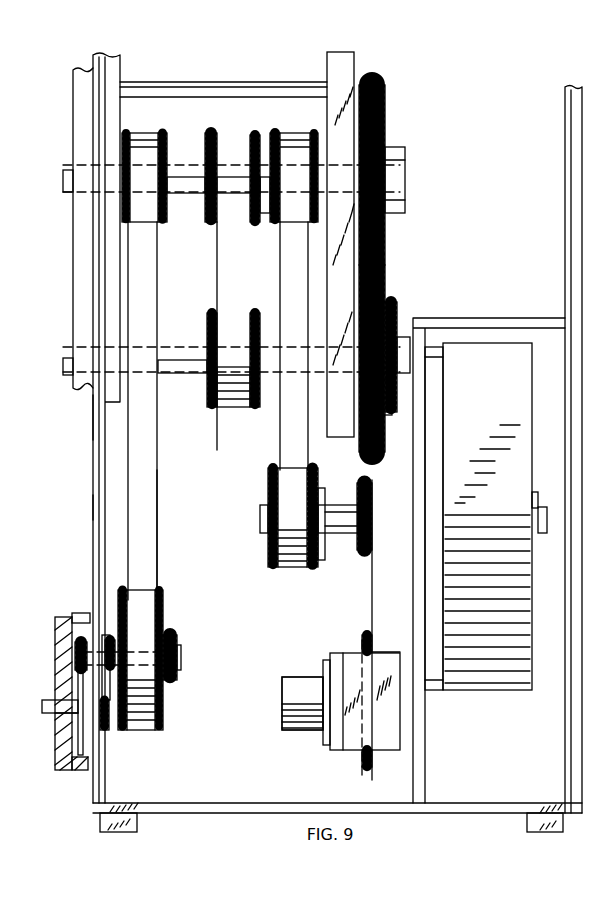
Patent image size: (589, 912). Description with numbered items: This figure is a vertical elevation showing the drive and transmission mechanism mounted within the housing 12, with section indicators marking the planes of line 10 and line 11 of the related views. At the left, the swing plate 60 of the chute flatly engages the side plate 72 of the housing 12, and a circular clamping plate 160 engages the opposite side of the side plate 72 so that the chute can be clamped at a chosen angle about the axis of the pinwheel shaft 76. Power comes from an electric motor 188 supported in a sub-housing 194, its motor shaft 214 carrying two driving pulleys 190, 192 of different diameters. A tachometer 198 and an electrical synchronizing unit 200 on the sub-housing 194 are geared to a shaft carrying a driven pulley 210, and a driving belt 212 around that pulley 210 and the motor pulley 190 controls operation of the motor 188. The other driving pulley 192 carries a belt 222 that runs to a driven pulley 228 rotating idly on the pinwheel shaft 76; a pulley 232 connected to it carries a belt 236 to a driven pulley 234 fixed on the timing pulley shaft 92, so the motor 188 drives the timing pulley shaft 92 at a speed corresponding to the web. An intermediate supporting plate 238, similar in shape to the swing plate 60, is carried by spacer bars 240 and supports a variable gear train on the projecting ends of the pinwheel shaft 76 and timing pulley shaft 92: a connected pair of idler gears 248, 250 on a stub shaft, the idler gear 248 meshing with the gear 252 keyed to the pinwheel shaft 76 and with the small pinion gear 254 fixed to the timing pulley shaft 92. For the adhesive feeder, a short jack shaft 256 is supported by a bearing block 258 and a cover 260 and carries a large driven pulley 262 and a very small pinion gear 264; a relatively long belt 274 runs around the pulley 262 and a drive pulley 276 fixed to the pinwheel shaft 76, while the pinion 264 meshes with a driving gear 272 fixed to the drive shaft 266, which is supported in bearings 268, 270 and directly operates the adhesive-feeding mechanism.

The section line 10- 10 is at (515, 68).
The section line 11- 11 is at (372, 70).
The housing 12 is at (90, 503).
The swing plate 60 is at (73, 84).
The side plate 72 is at (91, 425).
The pinwheel shaft 76 is at (186, 168).
The timing pulley shaft 92 is at (177, 350).
The clamping plate 160 is at (120, 63).
The electric motor 188 is at (483, 672).
The driving pulley 190 is at (363, 560).
The driving pulley 192 is at (270, 570).
The sub-housing 194 is at (470, 318).
The tachometer 198 is at (283, 716).
The electrical synchronizing unit 200 is at (264, 728).
The driven pulley 210 is at (362, 644).
The driving belt 212 is at (383, 612).
The motor shaft 214 is at (260, 515).
The belt 222 is at (290, 426).
The driven pulley 228 is at (272, 133).
The pulley 232 is at (207, 133).
The driven pulley 234 is at (210, 407).
The belt 236 is at (222, 250).
The intermediate supporting plate 238 is at (352, 80).
The spacer bar 240 is at (168, 82).
The idler gear 248 is at (376, 307).
The idler gear 250 is at (398, 402).
The gear 252 is at (386, 129).
The pinion gear 254 is at (398, 317).
The jack shaft 256 is at (113, 652).
The bearing block 258 is at (179, 673).
The cover 260 is at (78, 615).
The driven pulley 262 is at (161, 710).
The pinion gear 264 is at (75, 646).
The drive shaft 266 is at (50, 702).
The bearing 268 is at (108, 728).
The bearing 270 is at (58, 715).
The driving gear 272 is at (78, 740).
The belt 274 is at (148, 482).
The drive pulley 276 is at (165, 207).